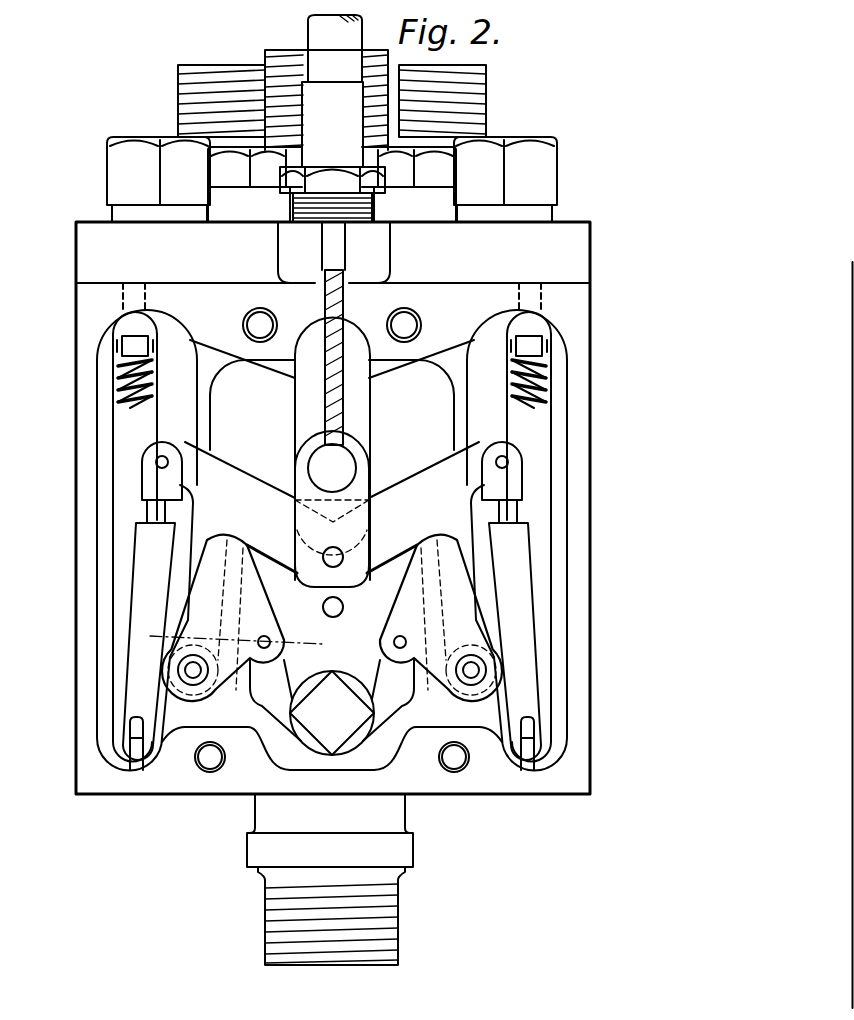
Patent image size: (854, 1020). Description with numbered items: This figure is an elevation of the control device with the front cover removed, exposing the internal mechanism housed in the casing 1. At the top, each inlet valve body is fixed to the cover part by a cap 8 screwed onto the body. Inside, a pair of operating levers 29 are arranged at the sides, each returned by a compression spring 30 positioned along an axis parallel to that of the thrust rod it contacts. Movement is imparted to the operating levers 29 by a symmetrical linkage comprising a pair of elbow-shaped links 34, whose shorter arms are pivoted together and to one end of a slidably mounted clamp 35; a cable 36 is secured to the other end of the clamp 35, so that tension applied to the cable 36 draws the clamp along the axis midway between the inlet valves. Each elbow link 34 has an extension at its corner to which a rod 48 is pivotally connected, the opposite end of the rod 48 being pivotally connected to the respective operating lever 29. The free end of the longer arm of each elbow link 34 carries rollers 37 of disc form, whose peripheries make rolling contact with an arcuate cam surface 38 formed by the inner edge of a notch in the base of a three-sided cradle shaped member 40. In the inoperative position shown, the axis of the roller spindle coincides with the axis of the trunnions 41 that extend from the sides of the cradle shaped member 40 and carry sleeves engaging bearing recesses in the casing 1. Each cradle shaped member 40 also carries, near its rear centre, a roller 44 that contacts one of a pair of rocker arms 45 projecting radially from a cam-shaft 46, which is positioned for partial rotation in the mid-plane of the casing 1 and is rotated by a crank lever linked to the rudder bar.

The casing 1 is at (592, 465).
The cap 8 is at (107, 162).
The operating lever 29 is at (132, 727).
The compression spring 30 is at (146, 408).
The elbow link 34 is at (263, 497).
The clamp 35 is at (308, 452).
The cable 36 is at (340, 407).
The roller 37 is at (164, 736).
The arcuate cam surface 38 is at (236, 539).
The cradle shaped member 40 is at (231, 701).
The trunnion 41 is at (192, 686).
The roller 44 is at (381, 642).
The rocker arm 45 is at (283, 706).
The cam-shaft 46 is at (332, 713).
The rod 48 is at (138, 613).